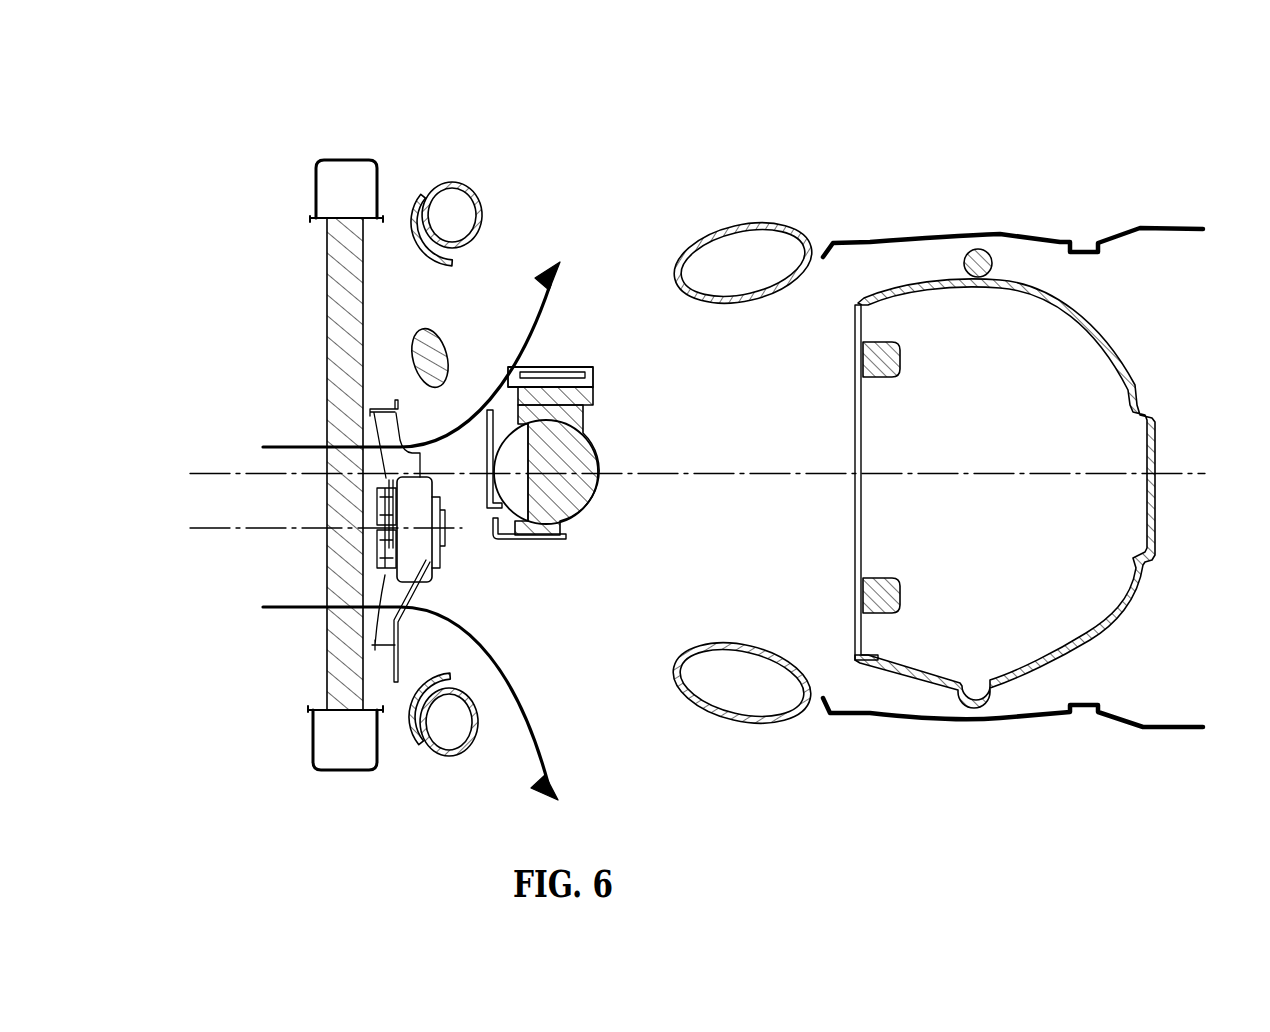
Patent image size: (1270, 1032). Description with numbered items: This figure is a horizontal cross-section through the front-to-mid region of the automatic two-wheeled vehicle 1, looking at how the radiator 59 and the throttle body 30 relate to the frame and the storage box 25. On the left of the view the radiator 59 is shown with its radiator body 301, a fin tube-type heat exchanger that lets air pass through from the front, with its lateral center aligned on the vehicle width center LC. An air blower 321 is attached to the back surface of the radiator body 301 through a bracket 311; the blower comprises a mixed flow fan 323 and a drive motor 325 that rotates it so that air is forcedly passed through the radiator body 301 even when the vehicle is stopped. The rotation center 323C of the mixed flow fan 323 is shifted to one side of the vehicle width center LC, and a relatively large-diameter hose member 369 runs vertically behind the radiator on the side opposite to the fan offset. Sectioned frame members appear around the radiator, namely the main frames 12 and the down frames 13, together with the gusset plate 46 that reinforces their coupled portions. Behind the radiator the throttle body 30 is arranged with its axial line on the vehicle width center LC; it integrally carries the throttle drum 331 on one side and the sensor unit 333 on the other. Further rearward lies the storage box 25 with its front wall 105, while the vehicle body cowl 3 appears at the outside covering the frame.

The automatic two-wheeled vehicle 1 is at (1188, 130).
The vehicle body cowl 3 is at (928, 218).
The main frames 12 is at (742, 228).
The down frames 13 is at (447, 183).
The storage box 25 is at (1034, 278).
The throttle body 30 is at (602, 441).
The gusset plate 46 is at (421, 200).
The radiator 59 is at (275, 195).
The front wall 105 is at (855, 460).
The radiator body 301 is at (325, 258).
The bracket 311 is at (395, 672).
The air blower 321 is at (373, 536).
The mixed flow fan 323 is at (378, 468).
The drive motor 325 is at (443, 532).
The throttle drum 331 is at (550, 540).
The sensor unit 333 is at (596, 392).
The hose member 369 is at (445, 345).
The vehicle width center LC is at (677, 473).
The rotation center 323C is at (289, 528).